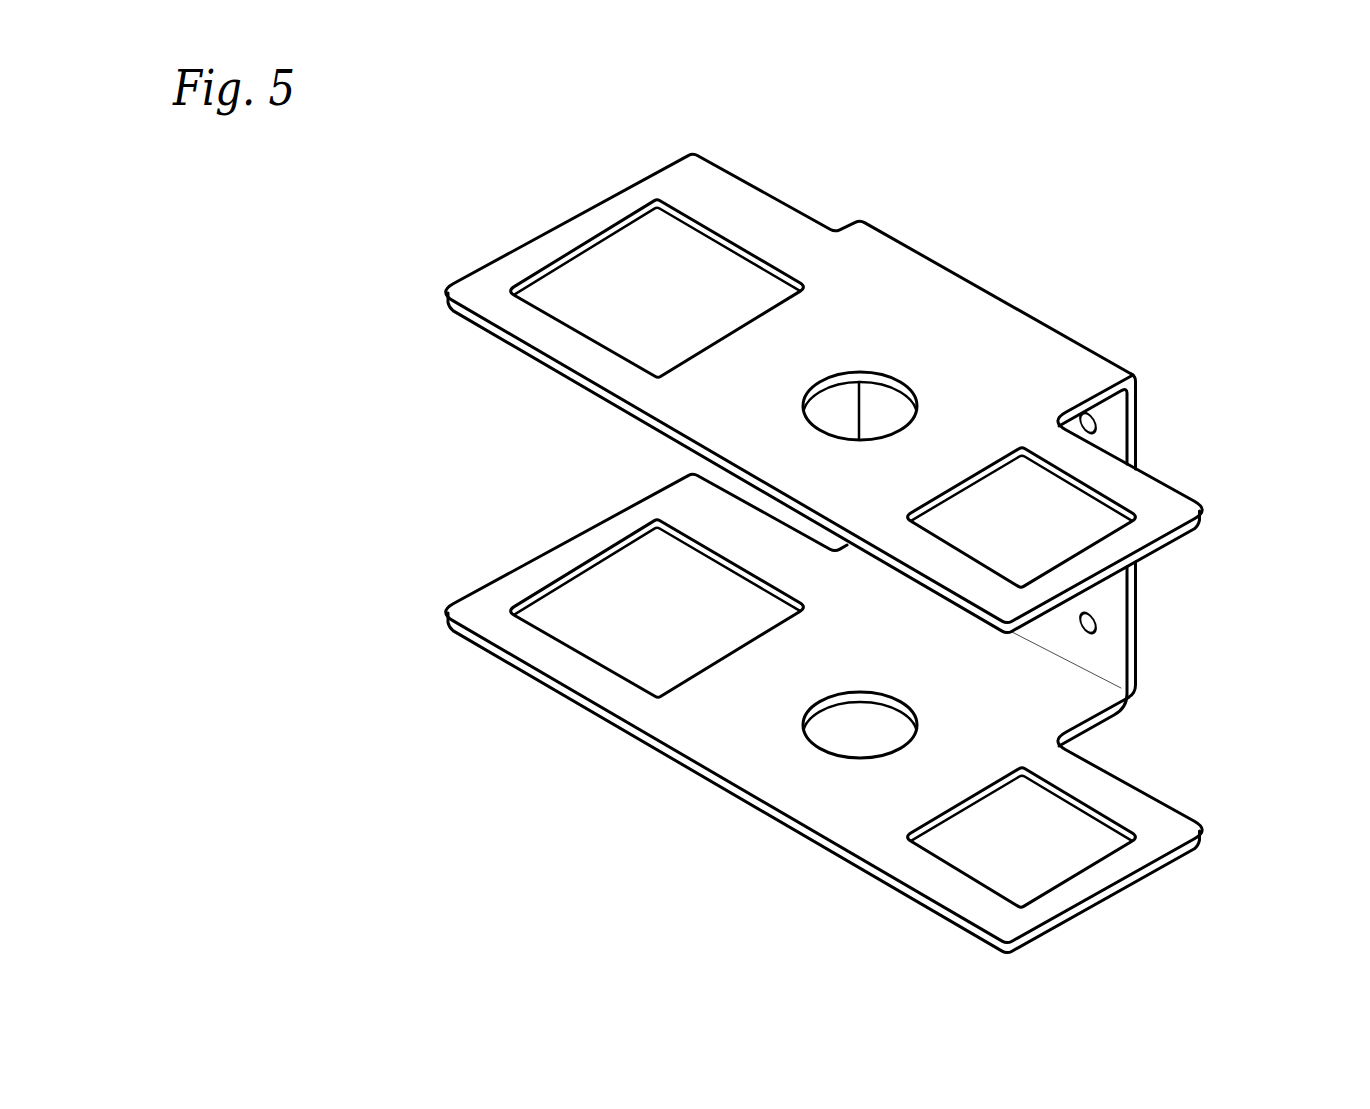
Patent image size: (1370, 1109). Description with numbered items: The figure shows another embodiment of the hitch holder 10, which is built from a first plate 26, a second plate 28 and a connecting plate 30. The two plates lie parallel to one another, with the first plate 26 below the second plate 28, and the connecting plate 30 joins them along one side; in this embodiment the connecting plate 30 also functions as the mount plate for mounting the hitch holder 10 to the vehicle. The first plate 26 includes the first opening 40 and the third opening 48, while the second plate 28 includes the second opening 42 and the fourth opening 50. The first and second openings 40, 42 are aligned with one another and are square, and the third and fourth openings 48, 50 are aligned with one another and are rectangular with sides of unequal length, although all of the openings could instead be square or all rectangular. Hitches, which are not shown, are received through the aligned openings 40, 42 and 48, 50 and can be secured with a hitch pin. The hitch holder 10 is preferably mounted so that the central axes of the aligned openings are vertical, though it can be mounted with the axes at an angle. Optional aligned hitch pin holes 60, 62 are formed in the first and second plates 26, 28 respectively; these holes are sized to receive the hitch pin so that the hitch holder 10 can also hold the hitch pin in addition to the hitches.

The hitch holder 10 is at (1068, 244).
The first plate 26 is at (822, 802).
The second plate 28 is at (1003, 375).
The connecting plate 30 is at (1122, 590).
The first opening 40 is at (1068, 855).
The second opening 42 is at (1085, 517).
The third opening 48 is at (608, 595).
The fourth opening 50 is at (592, 273).
The hitch pin hole 60 is at (832, 722).
The hitch pin hole 62 is at (835, 410).